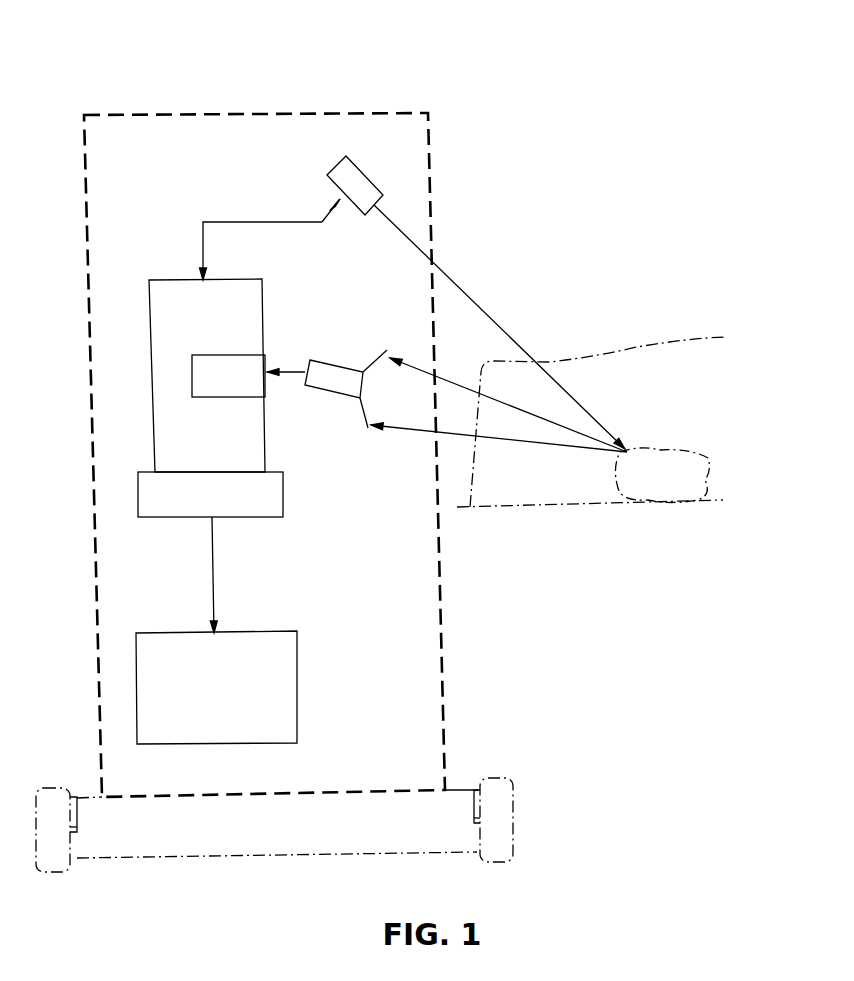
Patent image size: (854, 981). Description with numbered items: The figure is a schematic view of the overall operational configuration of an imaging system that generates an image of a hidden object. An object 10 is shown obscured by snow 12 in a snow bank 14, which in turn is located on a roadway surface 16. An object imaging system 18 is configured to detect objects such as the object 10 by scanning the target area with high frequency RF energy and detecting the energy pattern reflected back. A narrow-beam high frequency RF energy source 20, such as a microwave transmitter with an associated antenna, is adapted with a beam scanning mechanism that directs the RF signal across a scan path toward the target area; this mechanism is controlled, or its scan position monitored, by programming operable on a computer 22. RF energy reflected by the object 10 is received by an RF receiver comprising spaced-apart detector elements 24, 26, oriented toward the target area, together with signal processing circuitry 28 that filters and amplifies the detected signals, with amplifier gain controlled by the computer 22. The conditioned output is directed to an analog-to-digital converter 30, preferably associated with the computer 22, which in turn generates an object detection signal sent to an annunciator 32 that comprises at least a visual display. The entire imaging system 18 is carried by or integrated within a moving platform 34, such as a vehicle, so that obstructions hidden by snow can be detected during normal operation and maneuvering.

The object 10 is at (637, 447).
The snow 12 is at (647, 388).
The snow bank 14 is at (600, 353).
The roadway surface 16 is at (522, 508).
The object imaging system 18 is at (153, 112).
The narrow-beam high frequency RF energy source 20 is at (330, 172).
The computer 22 is at (265, 293).
The detector element 24 is at (377, 358).
The detector element 26 is at (365, 425).
The signal processing circuitry 28 is at (333, 396).
The analog-to-digital (A/D) converter 30 is at (238, 355).
The annunciator 32 is at (297, 659).
The moving platform 34 is at (462, 786).